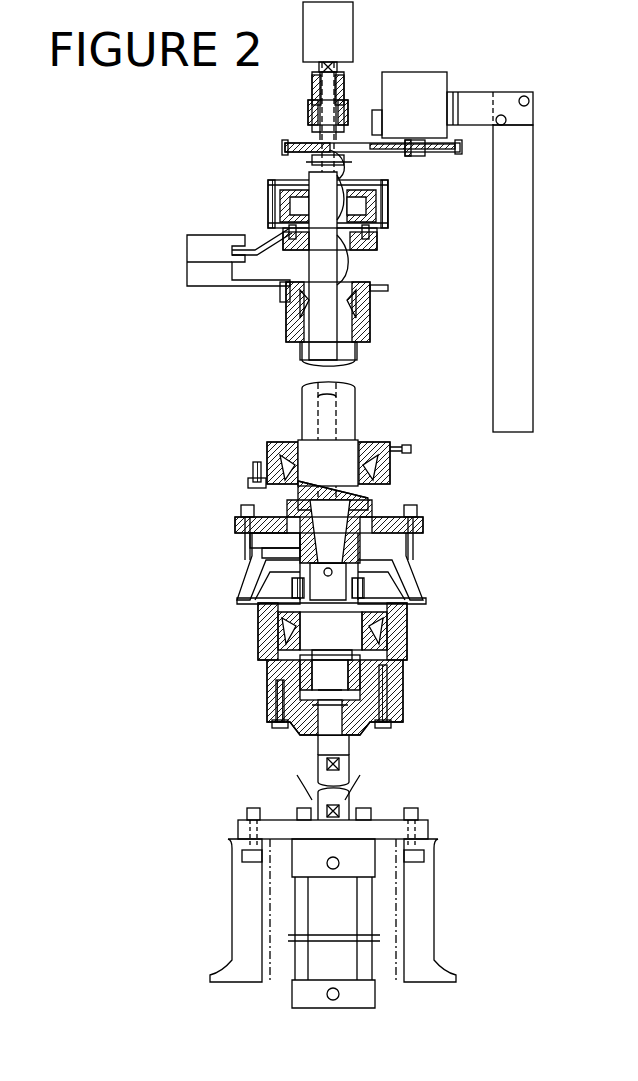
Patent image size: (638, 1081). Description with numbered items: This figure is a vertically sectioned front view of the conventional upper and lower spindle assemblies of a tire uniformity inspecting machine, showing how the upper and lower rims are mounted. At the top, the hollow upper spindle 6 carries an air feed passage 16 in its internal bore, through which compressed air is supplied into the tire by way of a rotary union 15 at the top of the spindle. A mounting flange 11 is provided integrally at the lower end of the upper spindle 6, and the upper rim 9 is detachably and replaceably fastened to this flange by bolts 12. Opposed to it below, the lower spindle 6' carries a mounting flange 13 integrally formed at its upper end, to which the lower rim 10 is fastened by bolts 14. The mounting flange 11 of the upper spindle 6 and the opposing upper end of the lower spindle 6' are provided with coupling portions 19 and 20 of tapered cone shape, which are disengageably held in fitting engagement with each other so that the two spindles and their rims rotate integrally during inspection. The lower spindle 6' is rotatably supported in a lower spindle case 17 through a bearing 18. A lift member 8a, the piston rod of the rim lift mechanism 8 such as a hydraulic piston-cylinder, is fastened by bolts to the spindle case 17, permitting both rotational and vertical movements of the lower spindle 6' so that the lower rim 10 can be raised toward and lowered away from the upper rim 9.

The rotary union 15 is at (343, 29).
The air feed passage 16 is at (362, 383).
The upper spindle 6 is at (351, 451).
The lower spindle 6' is at (287, 640).
The mounting flange 11 is at (390, 512).
The bolts 12 is at (240, 520).
The upper rim 9 is at (426, 540).
The coupling portion 19 is at (290, 540).
The coupling portion 20 is at (372, 553).
The bolts 14 is at (285, 570).
The mounting flange 13 is at (275, 590).
The lower rim 10 is at (428, 602).
The bearing 18 is at (412, 655).
The lower spindle case 17 is at (282, 672).
The lift member 8a is at (352, 810).
The rim lift mechanism 8 is at (372, 914).